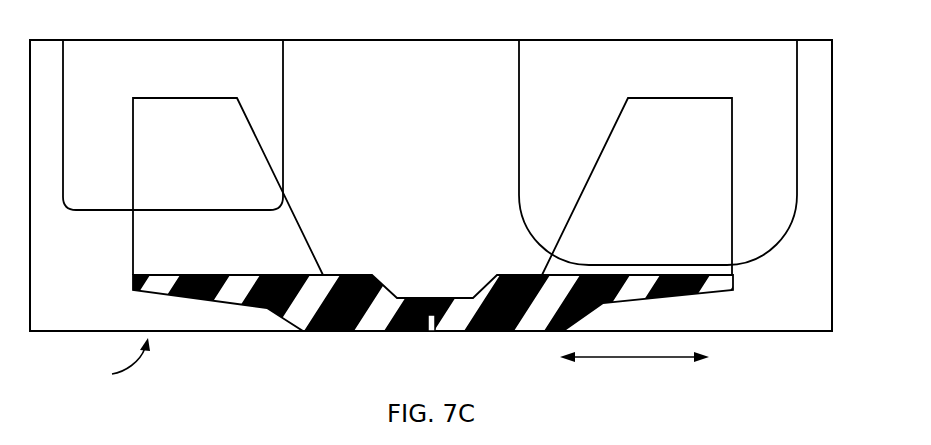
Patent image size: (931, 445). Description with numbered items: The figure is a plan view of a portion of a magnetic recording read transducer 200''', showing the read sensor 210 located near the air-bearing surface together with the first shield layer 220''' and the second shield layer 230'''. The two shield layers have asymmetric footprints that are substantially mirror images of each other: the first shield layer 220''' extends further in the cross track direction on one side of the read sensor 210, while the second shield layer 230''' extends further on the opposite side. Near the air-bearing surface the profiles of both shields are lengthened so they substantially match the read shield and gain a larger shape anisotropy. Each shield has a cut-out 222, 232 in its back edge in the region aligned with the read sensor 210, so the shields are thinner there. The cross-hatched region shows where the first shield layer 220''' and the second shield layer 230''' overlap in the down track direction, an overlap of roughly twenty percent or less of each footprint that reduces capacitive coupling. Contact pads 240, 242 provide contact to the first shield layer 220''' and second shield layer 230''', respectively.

The magnetic recording read transducer 200''' is at (431, 197).
The contact pad 242 is at (220, 175).
The contact pad 240 is at (637, 175).
The cut-out 222 is at (419, 255).
The cut-out 232 is at (435, 299).
The second shield layer 230''' is at (252, 317).
The first shield layer 220''' is at (651, 318).
The read sensor 210 is at (430, 331).